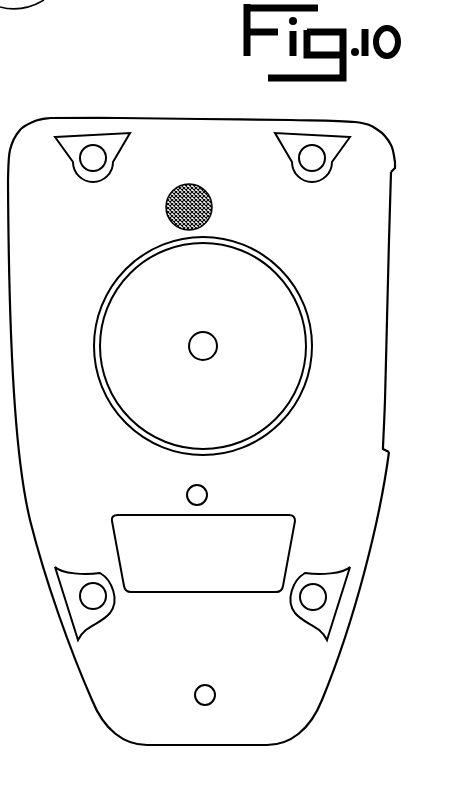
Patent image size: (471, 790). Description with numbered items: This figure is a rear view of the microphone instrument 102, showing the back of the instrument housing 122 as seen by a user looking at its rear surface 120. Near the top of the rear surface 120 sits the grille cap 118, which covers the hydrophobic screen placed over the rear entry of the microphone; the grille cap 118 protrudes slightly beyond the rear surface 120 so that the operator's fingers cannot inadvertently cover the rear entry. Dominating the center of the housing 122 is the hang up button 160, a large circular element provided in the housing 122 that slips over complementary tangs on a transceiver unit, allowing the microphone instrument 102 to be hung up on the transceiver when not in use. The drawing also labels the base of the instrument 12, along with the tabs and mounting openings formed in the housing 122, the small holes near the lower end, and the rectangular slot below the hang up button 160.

The microphone instrument 102 is at (281, 110).
The instrument housing 122 is at (31, 155).
The housing base 12 is at (202, 419).
The grille cap 118 is at (213, 207).
The rear surface 120 is at (147, 236).
The hang up button 160 is at (287, 325).